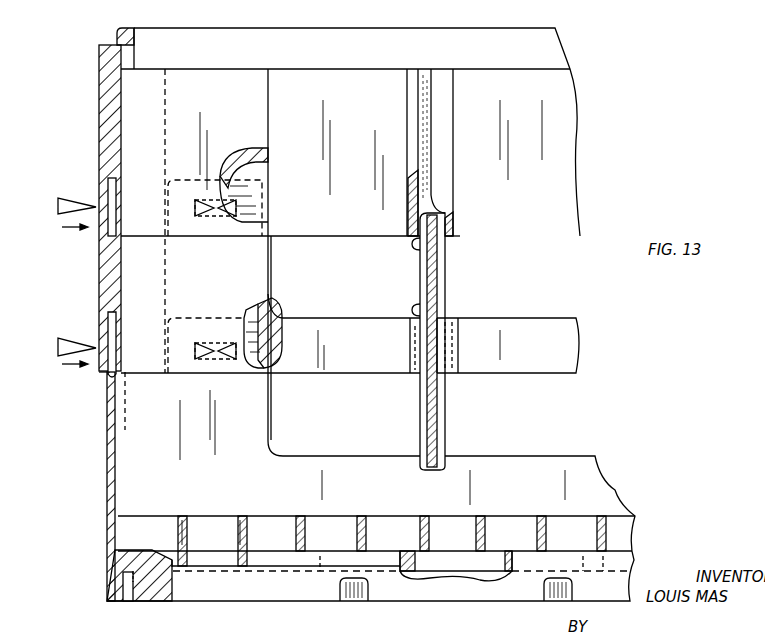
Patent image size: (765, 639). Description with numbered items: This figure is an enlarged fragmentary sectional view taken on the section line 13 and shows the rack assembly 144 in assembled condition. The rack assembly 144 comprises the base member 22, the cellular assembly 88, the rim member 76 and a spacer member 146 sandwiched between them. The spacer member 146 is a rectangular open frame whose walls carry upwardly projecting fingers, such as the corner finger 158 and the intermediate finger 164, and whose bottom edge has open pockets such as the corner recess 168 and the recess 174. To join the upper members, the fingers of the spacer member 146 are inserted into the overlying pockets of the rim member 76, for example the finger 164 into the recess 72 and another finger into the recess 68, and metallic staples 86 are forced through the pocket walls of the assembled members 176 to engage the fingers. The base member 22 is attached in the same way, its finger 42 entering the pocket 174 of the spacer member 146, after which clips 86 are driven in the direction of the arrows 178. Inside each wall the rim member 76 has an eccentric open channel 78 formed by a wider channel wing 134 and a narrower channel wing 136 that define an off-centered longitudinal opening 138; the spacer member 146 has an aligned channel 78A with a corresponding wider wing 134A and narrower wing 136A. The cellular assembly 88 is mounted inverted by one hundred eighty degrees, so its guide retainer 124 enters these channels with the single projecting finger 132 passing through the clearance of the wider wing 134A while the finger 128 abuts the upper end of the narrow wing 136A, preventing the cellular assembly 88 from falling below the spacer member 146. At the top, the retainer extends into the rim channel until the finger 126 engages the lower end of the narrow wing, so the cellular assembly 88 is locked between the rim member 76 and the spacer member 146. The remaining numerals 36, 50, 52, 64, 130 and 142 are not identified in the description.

The section line 13 is at (338, 4).
The base member 22 is at (630, 496).
The insert member 36 is at (250, 320).
The finger 42 is at (115, 395).
The mounting foot 50 is at (276, 550).
The spacer rib 52 is at (430, 514).
The top flange 64 is at (128, 28).
The recess or pocket 68 is at (263, 200).
The recess or pocket 72 is at (116, 200).
The rim member 76 is at (454, 24).
The open channel 78 is at (440, 88).
The open channel or guide 78A is at (442, 318).
The staple 86 is at (76, 206).
The cellular assembly 88 is at (470, 311).
The guide retainer 124 is at (446, 246).
The guide finger 126 is at (412, 244).
The guide finger 128 is at (412, 310).
The pin end 130 is at (437, 468).
The projecting finger 132 is at (458, 354).
The channel wing 134 is at (455, 130).
The channel wing 134A is at (460, 330).
The channel wing 136 is at (407, 110).
The channel wing 136A is at (410, 334).
The longitudinal opening 138 is at (428, 110).
The foot block 142 is at (130, 604).
The rack assembly 144 is at (606, 100).
The spacer member 146 is at (574, 348).
The finger or projection 158 is at (268, 172).
The finger or projection 164 is at (104, 186).
The recess or pocket 168 is at (287, 345).
The recess or pocket 174 is at (116, 326).
The assembled members 176 is at (78, 228).
The arrow 178 is at (82, 364).